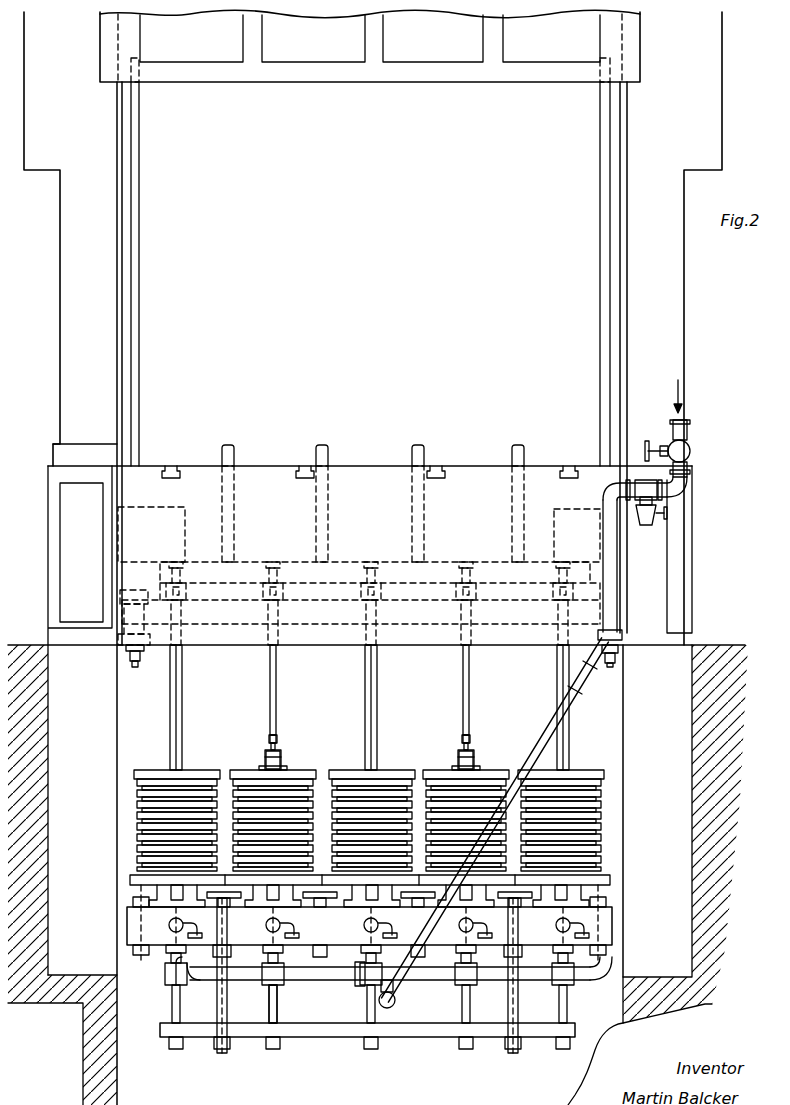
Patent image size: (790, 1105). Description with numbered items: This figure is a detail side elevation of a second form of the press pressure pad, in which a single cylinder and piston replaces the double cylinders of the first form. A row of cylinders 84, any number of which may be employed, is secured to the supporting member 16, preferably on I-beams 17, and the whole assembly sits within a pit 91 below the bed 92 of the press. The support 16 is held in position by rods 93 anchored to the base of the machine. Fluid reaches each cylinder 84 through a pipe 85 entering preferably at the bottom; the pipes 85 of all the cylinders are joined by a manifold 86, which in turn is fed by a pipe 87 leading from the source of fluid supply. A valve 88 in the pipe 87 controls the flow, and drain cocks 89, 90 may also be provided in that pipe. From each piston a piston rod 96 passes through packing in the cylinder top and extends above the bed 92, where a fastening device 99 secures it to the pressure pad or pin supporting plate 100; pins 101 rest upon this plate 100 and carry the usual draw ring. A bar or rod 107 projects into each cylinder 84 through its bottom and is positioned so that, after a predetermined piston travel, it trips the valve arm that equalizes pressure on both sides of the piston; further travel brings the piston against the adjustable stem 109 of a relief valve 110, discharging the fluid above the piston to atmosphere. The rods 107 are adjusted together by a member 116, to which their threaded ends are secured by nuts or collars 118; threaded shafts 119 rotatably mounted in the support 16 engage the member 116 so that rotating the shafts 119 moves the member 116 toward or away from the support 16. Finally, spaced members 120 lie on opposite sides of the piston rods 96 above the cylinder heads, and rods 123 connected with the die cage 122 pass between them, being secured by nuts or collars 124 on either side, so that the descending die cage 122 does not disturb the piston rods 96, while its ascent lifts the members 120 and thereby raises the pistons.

The supporting member 16 is at (155, 937).
The I-beams 17 is at (132, 893).
The cylinder 84 is at (136, 805).
The pipe 85 is at (272, 908).
The manifold 86 is at (345, 978).
The pipe 87 is at (548, 716).
The valve 88 is at (668, 448).
The drain cock 89 is at (652, 523).
The drain cock 90 is at (389, 1014).
The pit 91 is at (692, 757).
The bed 92 is at (655, 640).
The rods 93 is at (183, 703).
The piston rod 96 is at (171, 690).
The fastening device 99 is at (366, 561).
The pin supporting plate 100 is at (493, 568).
The pins 101 is at (330, 451).
The bar or rod 107 is at (370, 1003).
The adjustable stem 109 is at (271, 742).
The relief valve 110 is at (282, 763).
The member 116 is at (326, 1038).
The nuts or collars 118 is at (271, 1045).
The threaded shafts 119 is at (222, 1053).
The spaced members 120 is at (428, 613).
The die cage 122 is at (559, 78).
The rods 123 is at (140, 228).
The nuts or collars 124 is at (120, 595).